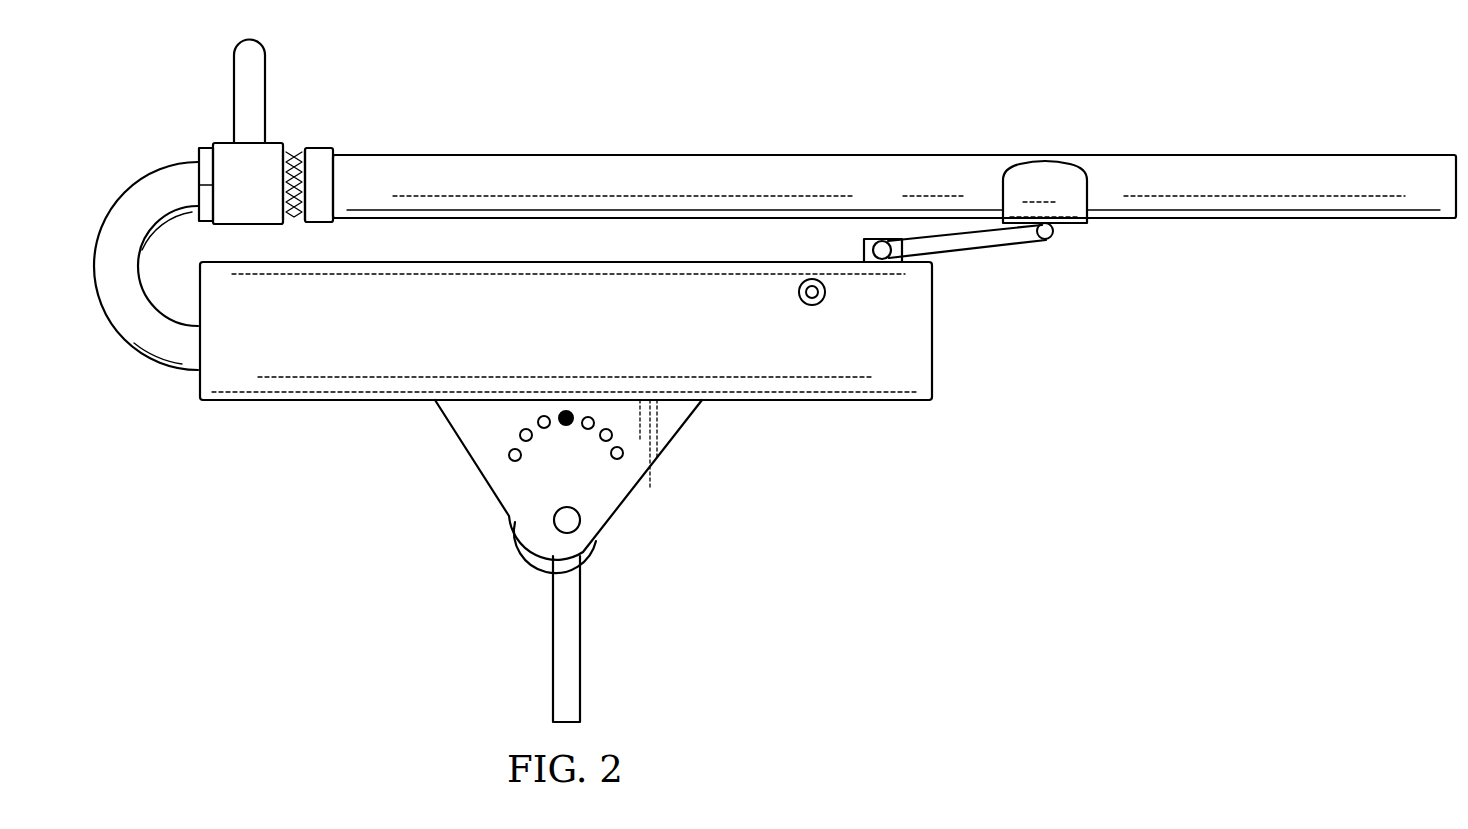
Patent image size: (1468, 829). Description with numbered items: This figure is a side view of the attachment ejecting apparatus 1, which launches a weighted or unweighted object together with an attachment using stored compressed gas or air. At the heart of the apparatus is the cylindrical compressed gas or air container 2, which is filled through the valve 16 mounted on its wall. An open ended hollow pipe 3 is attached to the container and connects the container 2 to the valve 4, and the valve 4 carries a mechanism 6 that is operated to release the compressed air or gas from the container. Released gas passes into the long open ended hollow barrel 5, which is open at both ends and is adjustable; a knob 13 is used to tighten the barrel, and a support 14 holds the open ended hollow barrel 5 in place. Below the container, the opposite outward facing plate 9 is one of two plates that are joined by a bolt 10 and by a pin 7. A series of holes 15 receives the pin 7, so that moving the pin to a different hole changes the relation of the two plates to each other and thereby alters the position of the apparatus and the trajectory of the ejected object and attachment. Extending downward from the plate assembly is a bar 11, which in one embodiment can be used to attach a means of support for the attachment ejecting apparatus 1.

The attachment ejecting apparatus 1 is at (1037, 507).
The cylindrical compressed gas or air container 2 is at (290, 392).
The open ended hollow pipe 3 is at (177, 372).
The valve 4 is at (273, 142).
The open ended hollow barrel 5 is at (927, 155).
The mechanism 6 is at (234, 98).
The pin 7 is at (566, 428).
The opposite outward facing plate 9 is at (612, 515).
The bolt 10 is at (572, 508).
The bar 11 is at (553, 644).
The knob 13 is at (881, 243).
The support 14 is at (1070, 216).
The holes 15 is at (508, 453).
The valve 16 is at (813, 302).